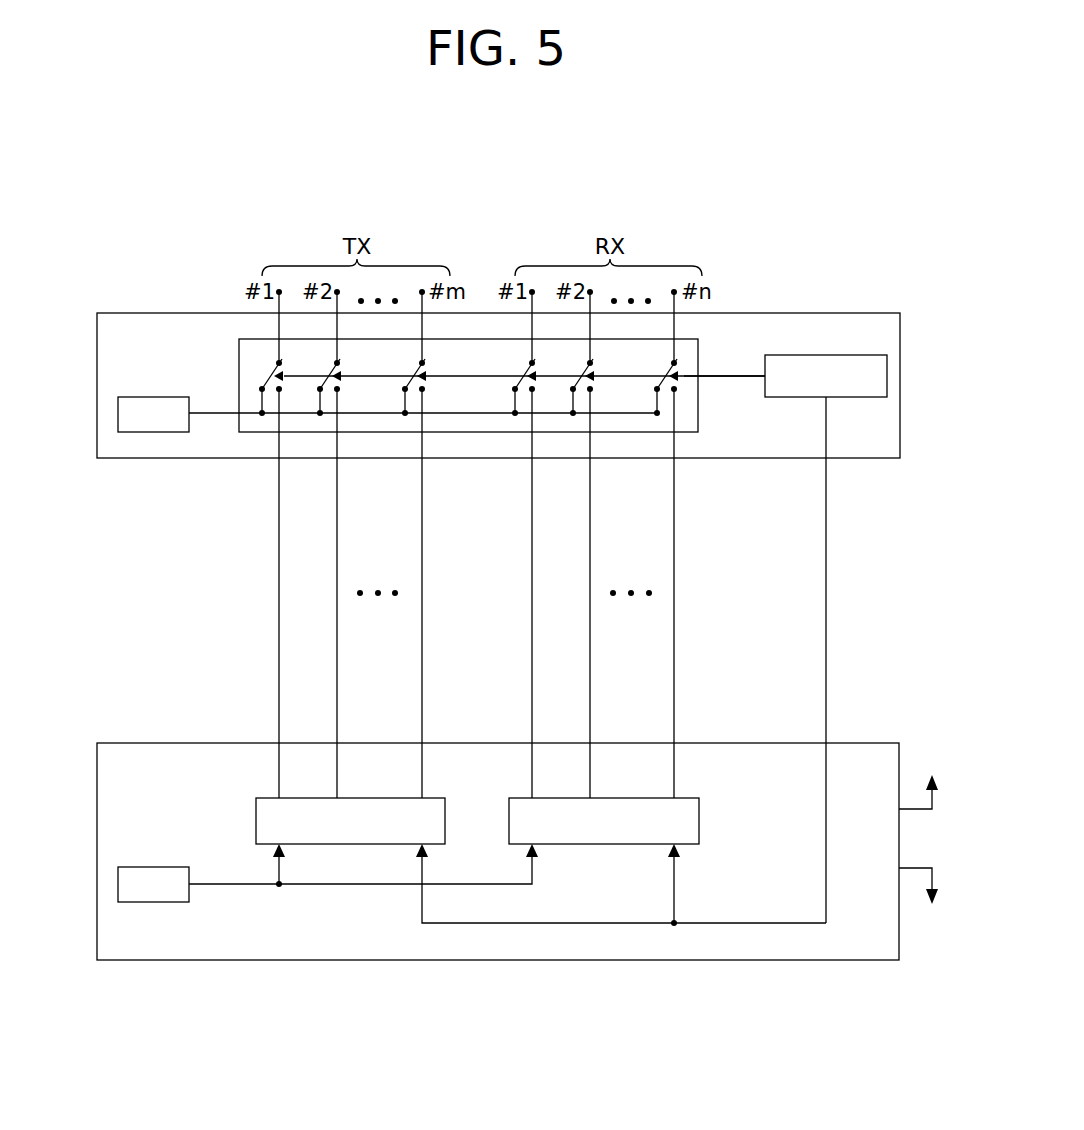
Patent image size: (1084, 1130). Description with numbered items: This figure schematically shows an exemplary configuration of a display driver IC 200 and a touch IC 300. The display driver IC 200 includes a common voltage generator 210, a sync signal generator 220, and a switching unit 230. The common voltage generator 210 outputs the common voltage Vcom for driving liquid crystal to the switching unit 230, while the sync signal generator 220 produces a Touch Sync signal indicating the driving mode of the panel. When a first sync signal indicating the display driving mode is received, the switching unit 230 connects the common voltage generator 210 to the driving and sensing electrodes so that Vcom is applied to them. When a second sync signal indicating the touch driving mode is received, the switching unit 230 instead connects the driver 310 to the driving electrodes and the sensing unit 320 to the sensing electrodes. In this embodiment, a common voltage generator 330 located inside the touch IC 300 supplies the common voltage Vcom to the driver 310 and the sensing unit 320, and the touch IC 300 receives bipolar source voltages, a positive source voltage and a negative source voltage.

The display driver IC 200 is at (825, 313).
The common voltage generator 210 is at (167, 397).
The sync signal generator 220 is at (835, 355).
The switching unit 230 is at (698, 339).
The touch IC 300 is at (97, 833).
The driver 310 is at (440, 798).
The sensing unit 320 is at (695, 798).
The common voltage generator 330 is at (167, 867).